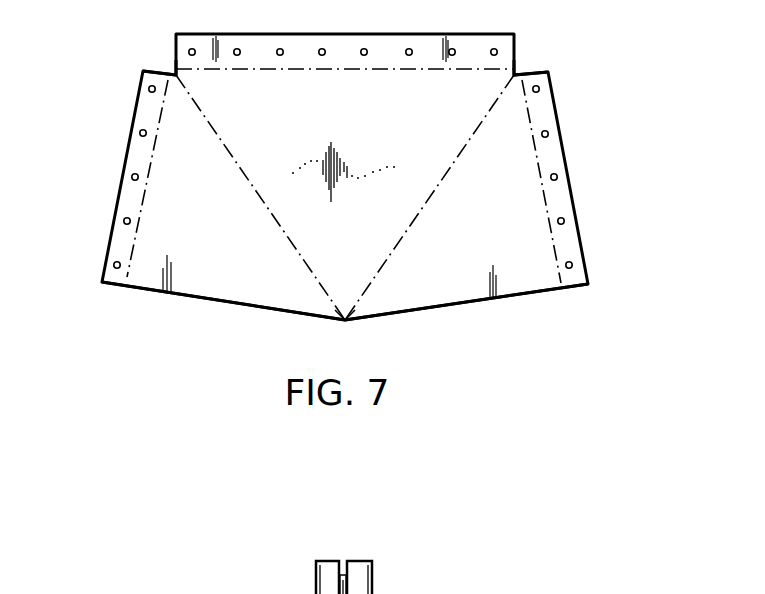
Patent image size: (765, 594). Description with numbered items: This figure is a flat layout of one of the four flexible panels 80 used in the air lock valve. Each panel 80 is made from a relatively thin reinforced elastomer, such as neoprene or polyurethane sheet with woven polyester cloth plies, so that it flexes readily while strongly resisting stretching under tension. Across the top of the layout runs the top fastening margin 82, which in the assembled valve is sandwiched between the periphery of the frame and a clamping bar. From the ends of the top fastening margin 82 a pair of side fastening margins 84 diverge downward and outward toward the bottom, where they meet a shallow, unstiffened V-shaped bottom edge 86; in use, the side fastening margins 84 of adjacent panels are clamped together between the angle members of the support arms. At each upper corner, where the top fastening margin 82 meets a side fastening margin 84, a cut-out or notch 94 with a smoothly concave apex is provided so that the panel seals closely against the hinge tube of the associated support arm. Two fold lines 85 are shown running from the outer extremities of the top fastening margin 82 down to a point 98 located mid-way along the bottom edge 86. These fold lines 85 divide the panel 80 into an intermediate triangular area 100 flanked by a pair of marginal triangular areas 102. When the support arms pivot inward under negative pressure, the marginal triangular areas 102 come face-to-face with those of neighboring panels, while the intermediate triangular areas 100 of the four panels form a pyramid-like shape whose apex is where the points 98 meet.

The flexible panel 80 is at (105, 155).
The top fastening margin 82 is at (388, 42).
The side fastening margin 84 is at (560, 189).
The fold lines 85 is at (298, 243).
The bottom edge 86 is at (273, 313).
The notches 94 is at (175, 75).
The point 98 is at (346, 321).
The intermediate triangular area 100 is at (341, 133).
The marginal triangular areas 102 is at (190, 228).